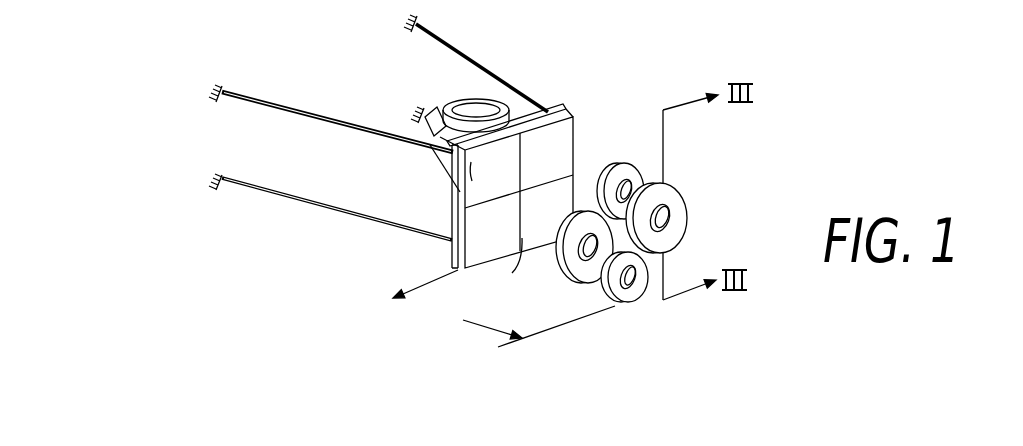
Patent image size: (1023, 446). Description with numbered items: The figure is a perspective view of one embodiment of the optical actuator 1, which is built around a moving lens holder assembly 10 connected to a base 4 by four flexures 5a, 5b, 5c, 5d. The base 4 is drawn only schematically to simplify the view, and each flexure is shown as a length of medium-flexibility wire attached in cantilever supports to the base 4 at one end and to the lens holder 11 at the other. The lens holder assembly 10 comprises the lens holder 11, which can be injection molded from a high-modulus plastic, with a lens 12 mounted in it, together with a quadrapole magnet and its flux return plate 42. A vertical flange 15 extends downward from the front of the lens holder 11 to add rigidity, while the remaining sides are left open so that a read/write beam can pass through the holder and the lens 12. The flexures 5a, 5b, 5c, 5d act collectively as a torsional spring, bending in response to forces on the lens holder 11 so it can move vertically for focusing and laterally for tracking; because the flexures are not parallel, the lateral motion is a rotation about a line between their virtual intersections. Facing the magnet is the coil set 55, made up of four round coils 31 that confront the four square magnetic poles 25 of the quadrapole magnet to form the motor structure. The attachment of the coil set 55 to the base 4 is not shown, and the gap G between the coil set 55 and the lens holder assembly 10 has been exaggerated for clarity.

The actuator 1 is at (650, 66).
The base 4 is at (214, 88).
The flexure 5a is at (348, 97).
The flexure 5b is at (306, 204).
The flexure 5c is at (490, 74).
The flexure 5d is at (426, 112).
The lens holder assembly 10 is at (441, 84).
The lens holder 11 is at (526, 122).
The lens 12 is at (500, 102).
The vertical flange 15 is at (437, 152).
The square magnetic poles 25 is at (570, 135).
The round coils 31 is at (641, 140).
The flux return plate 42 is at (450, 247).
The coil set 55 is at (642, 316).
The gap G is at (504, 308).